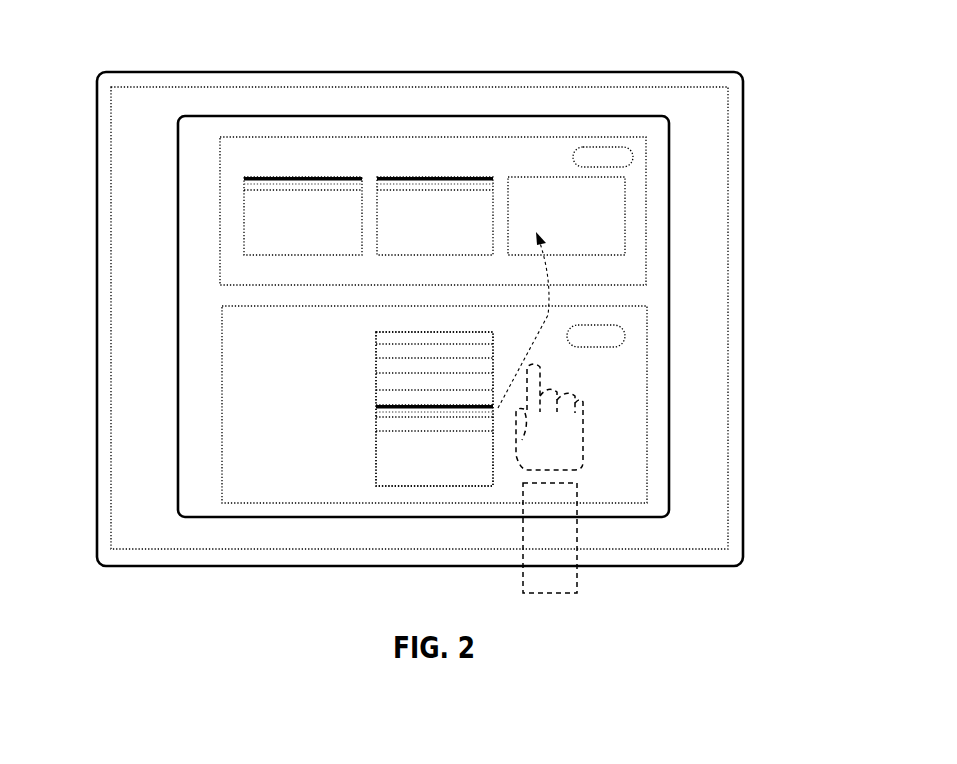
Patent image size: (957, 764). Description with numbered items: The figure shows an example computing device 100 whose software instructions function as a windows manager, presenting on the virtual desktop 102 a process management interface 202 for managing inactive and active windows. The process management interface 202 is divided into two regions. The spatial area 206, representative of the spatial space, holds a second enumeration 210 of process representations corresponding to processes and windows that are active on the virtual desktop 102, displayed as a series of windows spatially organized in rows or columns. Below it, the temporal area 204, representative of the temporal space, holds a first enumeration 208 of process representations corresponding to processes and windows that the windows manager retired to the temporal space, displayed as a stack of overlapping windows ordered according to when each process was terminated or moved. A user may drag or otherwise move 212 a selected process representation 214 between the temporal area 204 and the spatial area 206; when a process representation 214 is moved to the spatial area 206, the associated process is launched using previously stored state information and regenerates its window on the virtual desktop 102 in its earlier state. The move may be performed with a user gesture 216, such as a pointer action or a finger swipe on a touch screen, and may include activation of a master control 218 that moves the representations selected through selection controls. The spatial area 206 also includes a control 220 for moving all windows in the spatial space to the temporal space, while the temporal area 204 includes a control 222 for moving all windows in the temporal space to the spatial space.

The computing device 100 is at (244, 72).
The virtual desktop 102 is at (455, 87).
The process management interface 202 is at (612, 117).
The temporal area 204 is at (220, 457).
The spatial area 206 is at (250, 137).
The first enumeration 208 is at (362, 332).
The second enumeration 210 is at (235, 255).
The move 212 is at (548, 278).
The process representation 214 is at (460, 410).
The user gesture 216 is at (538, 368).
The master control 218 is at (715, 211).
The control for moving all windows to the temporal space 220 is at (628, 148).
The control for moving all windows to the spatial space 222 is at (625, 331).